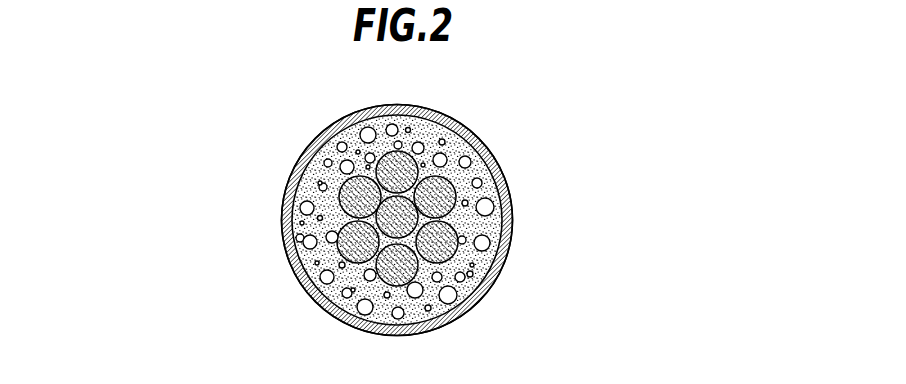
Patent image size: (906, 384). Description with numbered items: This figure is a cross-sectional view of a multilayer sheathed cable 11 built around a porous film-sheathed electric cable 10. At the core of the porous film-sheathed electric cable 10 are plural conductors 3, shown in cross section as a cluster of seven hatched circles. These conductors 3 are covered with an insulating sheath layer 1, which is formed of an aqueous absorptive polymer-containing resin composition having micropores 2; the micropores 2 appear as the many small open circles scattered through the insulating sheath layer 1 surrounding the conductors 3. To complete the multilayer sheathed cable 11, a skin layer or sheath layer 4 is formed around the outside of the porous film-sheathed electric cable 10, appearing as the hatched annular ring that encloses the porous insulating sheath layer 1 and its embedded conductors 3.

The multilayer sheathed cable 11 is at (273, 169).
The porous film-sheathed electric cable 10 is at (456, 124).
The insulating sheath layer 1 is at (487, 158).
The conductors 3 is at (511, 213).
The micropores 2 is at (474, 273).
The skin layer or sheath layer 4 is at (300, 278).